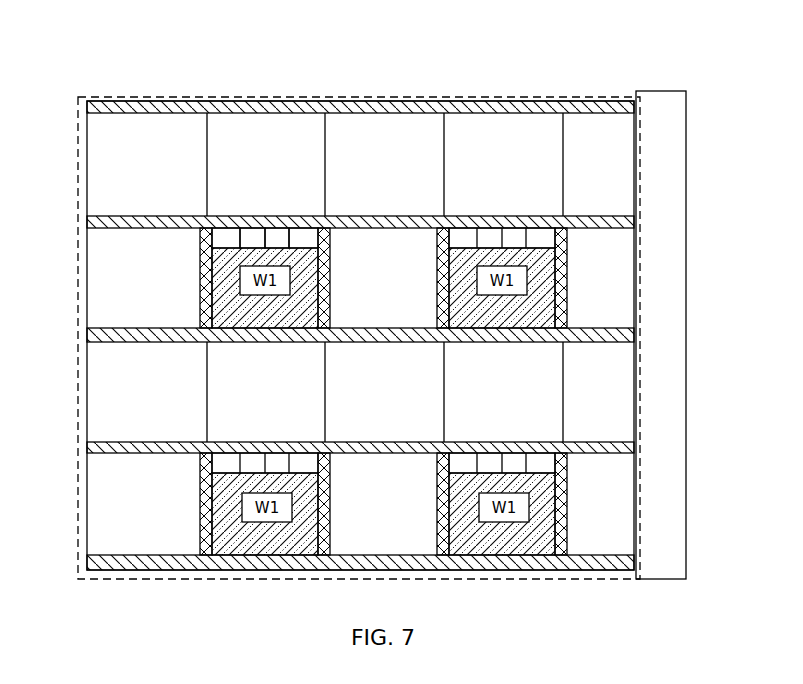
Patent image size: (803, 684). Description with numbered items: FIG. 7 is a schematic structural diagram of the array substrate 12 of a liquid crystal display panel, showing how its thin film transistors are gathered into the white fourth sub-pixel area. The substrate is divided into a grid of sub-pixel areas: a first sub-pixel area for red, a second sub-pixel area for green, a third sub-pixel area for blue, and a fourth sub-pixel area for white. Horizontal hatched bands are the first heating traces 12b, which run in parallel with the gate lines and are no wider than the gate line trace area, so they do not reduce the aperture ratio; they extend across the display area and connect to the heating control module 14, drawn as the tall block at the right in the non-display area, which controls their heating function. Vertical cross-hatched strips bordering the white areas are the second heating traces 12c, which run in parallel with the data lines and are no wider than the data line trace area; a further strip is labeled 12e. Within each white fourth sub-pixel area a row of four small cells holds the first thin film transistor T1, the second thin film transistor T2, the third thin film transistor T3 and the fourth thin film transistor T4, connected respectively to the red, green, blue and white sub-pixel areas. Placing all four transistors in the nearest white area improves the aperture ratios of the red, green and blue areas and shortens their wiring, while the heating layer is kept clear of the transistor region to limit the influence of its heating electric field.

The array substrate 12 is at (336, 97).
The first heating traces 12b is at (88, 221).
The second heating traces 12c is at (200, 252).
The partition wall 12e is at (200, 307).
The heating control module 14 is at (670, 170).
The first thin film transistor T1 is at (226, 238).
The second thin film transistor T2 is at (252, 238).
The third thin film transistor T3 is at (277, 238).
The fourth thin film transistor T4 is at (302, 238).